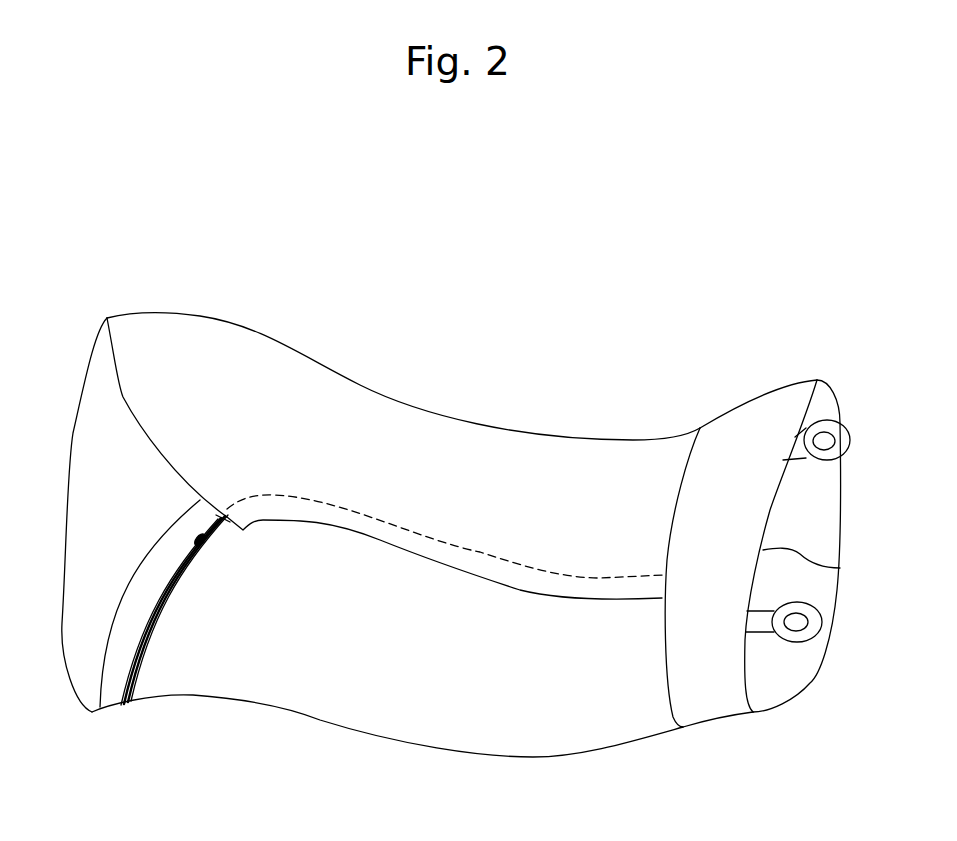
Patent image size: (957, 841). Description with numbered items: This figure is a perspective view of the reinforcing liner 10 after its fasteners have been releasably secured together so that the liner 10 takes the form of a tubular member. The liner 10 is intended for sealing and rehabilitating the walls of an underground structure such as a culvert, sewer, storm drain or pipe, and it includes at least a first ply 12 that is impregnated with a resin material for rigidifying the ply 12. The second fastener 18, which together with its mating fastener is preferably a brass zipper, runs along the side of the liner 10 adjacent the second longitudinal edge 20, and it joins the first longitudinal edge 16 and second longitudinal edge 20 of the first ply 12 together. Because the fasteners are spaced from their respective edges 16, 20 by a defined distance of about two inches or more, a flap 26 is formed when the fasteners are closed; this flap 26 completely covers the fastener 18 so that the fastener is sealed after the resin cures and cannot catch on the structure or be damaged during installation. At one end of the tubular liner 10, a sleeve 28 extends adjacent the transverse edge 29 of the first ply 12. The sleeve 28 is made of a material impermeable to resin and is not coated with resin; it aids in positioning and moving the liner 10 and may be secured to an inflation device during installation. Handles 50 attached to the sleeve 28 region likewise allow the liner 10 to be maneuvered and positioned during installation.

The reinforcing liner 10 is at (597, 357).
The first ply 12 is at (465, 738).
The first longitudinal edge 16 is at (369, 544).
The second fastener 18 is at (167, 597).
The second longitudinal edge 20 is at (108, 610).
The flap 26 is at (298, 515).
The sleeve 28 is at (758, 413).
The transverse edge 29 is at (840, 568).
The handles 50 is at (852, 423).